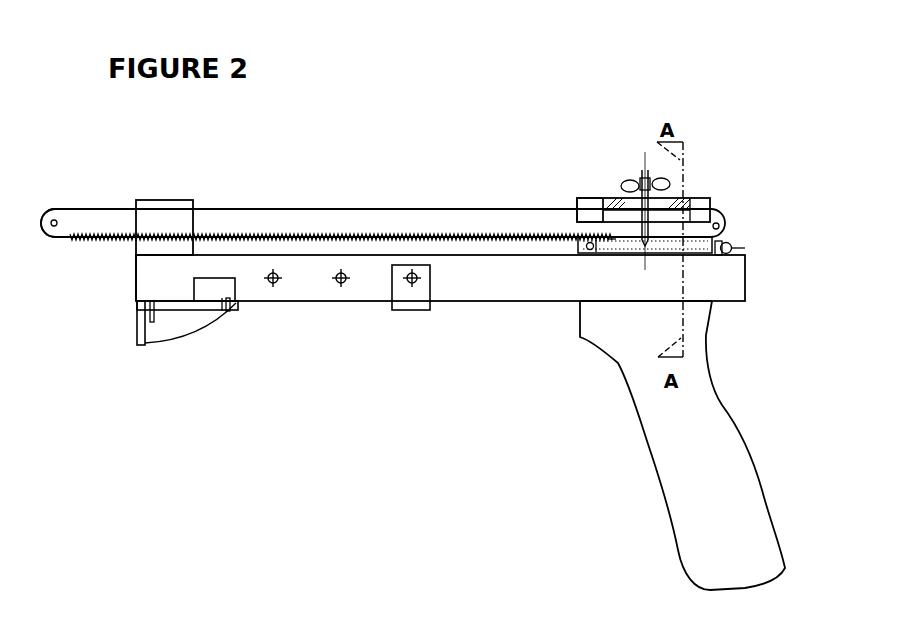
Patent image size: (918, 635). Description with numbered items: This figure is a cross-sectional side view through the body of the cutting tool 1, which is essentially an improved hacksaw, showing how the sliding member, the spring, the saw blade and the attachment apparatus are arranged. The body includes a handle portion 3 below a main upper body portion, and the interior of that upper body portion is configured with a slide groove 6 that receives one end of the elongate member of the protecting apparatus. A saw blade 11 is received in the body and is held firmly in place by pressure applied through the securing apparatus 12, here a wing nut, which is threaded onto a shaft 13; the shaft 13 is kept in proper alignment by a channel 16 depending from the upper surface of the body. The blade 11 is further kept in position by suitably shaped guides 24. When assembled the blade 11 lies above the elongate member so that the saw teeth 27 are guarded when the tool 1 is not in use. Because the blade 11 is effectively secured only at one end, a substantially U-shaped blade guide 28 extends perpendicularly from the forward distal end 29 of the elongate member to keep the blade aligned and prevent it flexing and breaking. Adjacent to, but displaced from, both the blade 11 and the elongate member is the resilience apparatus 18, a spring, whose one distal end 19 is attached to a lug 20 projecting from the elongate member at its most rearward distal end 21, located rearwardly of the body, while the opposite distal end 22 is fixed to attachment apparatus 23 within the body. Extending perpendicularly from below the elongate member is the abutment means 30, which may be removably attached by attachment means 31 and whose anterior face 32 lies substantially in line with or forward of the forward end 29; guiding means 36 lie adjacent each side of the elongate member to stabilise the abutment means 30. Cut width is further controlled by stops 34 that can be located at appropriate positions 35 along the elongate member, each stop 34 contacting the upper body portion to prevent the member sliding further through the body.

The tool 1 is at (424, 504).
The handle portion 3 is at (720, 447).
The slide groove 6 is at (600, 305).
The saw blade 11 is at (267, 220).
The securing apparatus 12 is at (663, 186).
The shaft 13 is at (632, 222).
The channel 16 is at (627, 207).
The resilience apparatus 18 is at (700, 237).
The distal end of resilience apparatus 19 is at (735, 248).
The lug 20 is at (731, 244).
The rearward distal end 21 is at (748, 279).
The opposite distal end of resilience means 22 is at (590, 247).
The attachment apparatus 23 is at (582, 243).
The guides 24 is at (597, 220).
The saw teeth 27 is at (78, 246).
The blade guide 28 is at (150, 220).
The forward distal end 29 is at (134, 277).
The abutment means 30 is at (185, 320).
The attachment means 31 is at (152, 323).
The anterior face 32 is at (138, 322).
The stops 34 is at (402, 292).
The positions 35 is at (341, 287).
The guiding means 36 is at (228, 312).